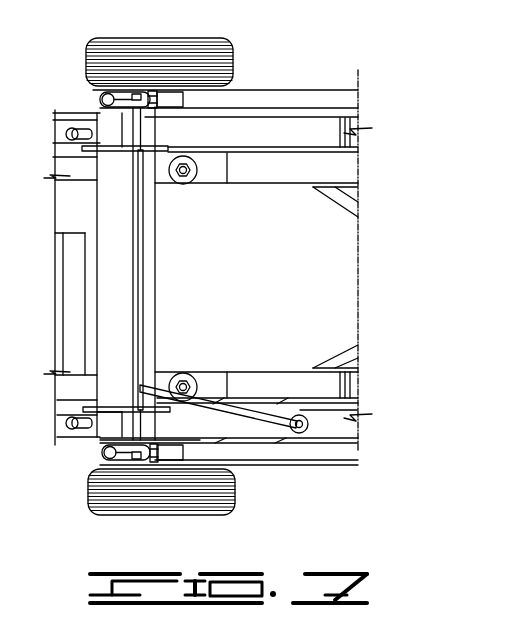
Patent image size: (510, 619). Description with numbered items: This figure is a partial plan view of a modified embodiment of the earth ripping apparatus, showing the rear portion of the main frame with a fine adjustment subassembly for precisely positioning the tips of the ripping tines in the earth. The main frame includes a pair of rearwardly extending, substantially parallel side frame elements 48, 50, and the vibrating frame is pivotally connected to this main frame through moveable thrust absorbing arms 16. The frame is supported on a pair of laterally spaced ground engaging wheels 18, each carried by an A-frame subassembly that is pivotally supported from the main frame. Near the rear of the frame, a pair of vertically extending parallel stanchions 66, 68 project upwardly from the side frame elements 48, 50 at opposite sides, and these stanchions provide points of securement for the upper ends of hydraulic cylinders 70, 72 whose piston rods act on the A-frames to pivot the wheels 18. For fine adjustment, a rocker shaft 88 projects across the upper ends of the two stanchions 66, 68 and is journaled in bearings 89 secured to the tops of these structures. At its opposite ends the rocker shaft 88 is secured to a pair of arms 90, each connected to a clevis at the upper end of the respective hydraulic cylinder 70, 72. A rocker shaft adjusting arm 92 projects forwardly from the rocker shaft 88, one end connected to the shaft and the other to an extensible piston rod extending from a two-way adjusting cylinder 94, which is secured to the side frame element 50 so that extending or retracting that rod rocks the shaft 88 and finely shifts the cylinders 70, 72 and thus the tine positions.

The thrust absorbing arm 16 is at (272, 186).
The ground engaging wheel 18 is at (232, 44).
The side frame element 48 is at (225, 121).
The side frame element 50 is at (362, 411).
The stanchion 66 is at (107, 428).
The stanchion 68 is at (105, 127).
The hydraulic cylinder 70 is at (128, 462).
The hydraulic cylinder 72 is at (126, 97).
The rocker shaft 88 is at (143, 243).
The bearing 89 is at (145, 131).
The arm 90 is at (123, 108).
The rocker shaft adjusting arm 92 is at (265, 423).
The two-way adjusting cylinder 94 is at (308, 414).